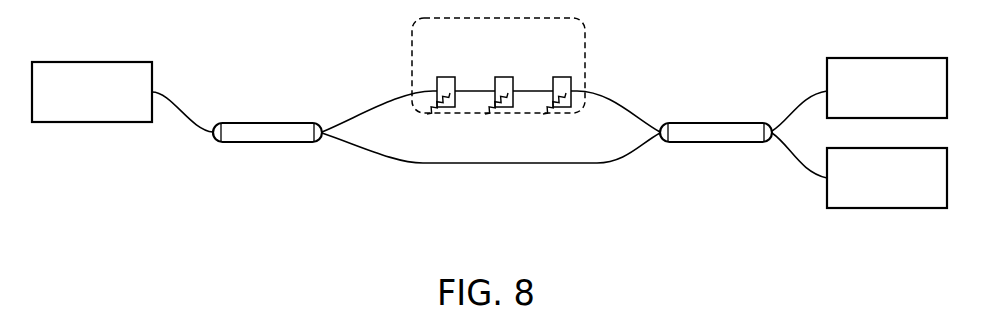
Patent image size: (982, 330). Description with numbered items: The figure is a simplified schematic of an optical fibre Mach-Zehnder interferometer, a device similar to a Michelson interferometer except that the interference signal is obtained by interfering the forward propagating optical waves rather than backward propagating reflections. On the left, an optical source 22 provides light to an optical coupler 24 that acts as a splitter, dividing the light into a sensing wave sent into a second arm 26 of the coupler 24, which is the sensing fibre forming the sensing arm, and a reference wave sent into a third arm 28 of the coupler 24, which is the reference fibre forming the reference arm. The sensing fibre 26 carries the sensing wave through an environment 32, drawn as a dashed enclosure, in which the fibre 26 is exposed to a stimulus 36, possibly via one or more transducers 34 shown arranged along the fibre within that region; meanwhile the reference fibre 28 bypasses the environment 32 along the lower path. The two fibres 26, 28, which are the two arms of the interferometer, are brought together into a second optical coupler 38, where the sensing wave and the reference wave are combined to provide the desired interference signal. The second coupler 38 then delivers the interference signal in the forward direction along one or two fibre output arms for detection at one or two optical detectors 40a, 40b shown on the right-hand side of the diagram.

The optical source 22 is at (109, 105).
The optical coupler 24 is at (260, 143).
The second arm 26 is at (379, 101).
The third arm 28 is at (362, 148).
The environment 32 is at (514, 63).
The transducers 34 is at (571, 84).
The stimulus 36 is at (548, 112).
The second optical coupler 38 is at (717, 143).
The optical detector 40a is at (913, 101).
The optical detector 40b is at (913, 191).